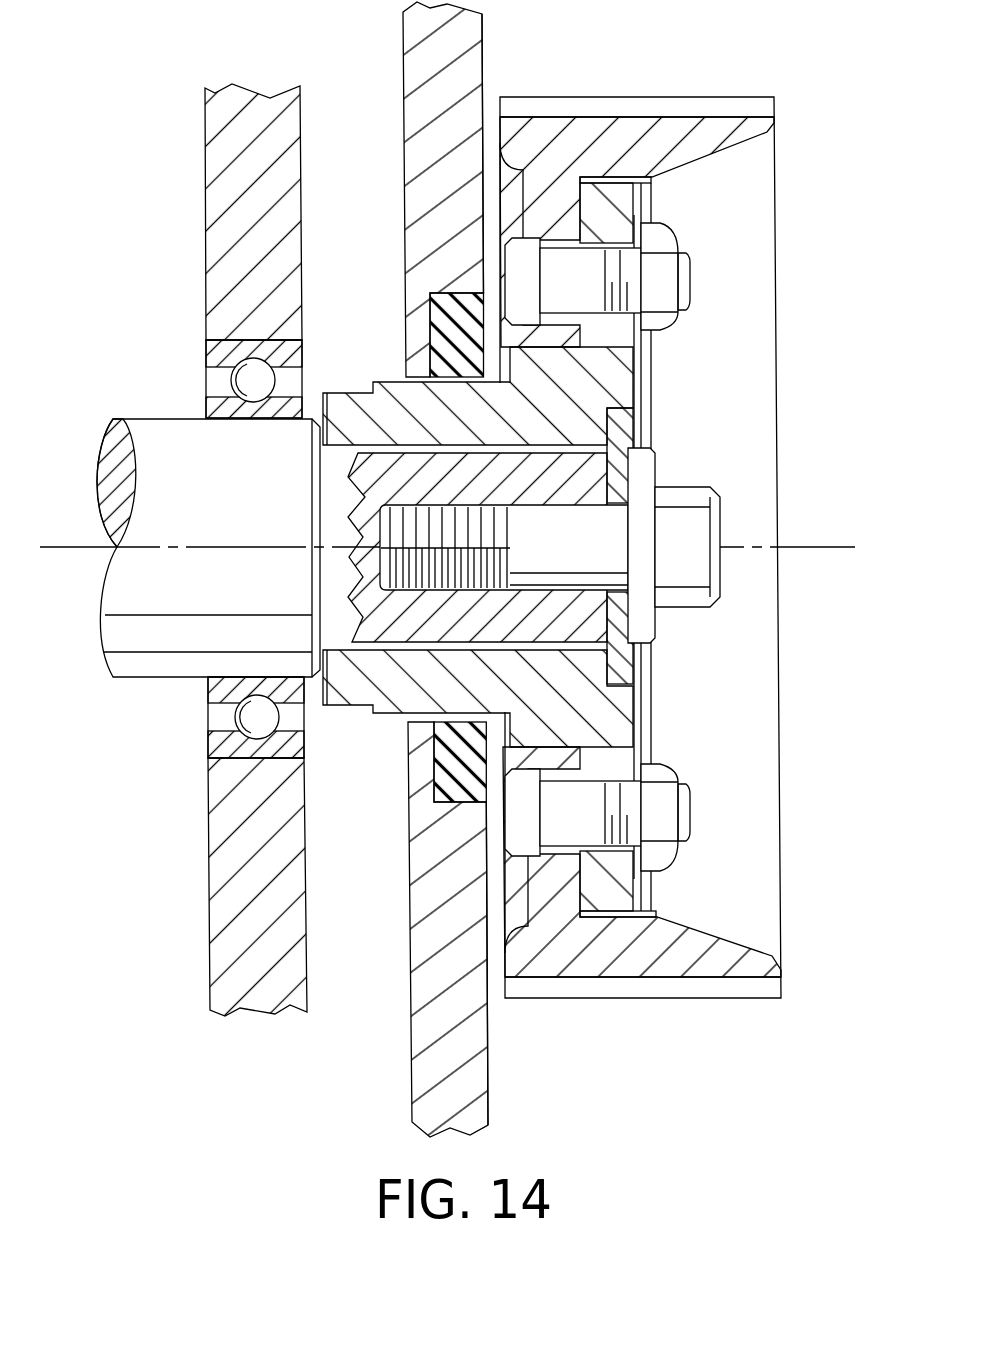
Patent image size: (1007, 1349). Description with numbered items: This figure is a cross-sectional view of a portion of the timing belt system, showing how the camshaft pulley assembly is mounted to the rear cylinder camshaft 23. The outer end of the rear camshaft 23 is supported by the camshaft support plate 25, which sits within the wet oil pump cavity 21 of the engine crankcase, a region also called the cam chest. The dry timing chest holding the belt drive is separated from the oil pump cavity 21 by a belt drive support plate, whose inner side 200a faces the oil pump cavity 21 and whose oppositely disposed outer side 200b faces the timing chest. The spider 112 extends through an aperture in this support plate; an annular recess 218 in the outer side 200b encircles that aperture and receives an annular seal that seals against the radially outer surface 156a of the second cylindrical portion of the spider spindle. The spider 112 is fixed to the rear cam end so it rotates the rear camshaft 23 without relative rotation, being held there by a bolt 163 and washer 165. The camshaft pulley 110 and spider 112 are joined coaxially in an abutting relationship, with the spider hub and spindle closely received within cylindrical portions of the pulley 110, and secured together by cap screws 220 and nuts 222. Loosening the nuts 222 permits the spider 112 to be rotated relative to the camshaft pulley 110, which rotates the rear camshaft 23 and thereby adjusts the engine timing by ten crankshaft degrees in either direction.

The oil pump cavity 21 is at (172, 832).
The rear cylinder camshaft 23 is at (157, 418).
The camshaft support plate 25 is at (205, 200).
The camshaft pulley 110 is at (774, 118).
The spider 112 is at (634, 388).
The radially outer surface of the second cylindrical portion 156a is at (397, 382).
The bolt 163 is at (683, 605).
The washer 165 is at (623, 665).
The inner side of the belt drive support plate 200a is at (403, 38).
The outer side of the belt drive support plate 200b is at (482, 36).
The annular recess 218 is at (442, 768).
The cap screws 220 is at (480, 293).
The nuts 222 is at (662, 220).